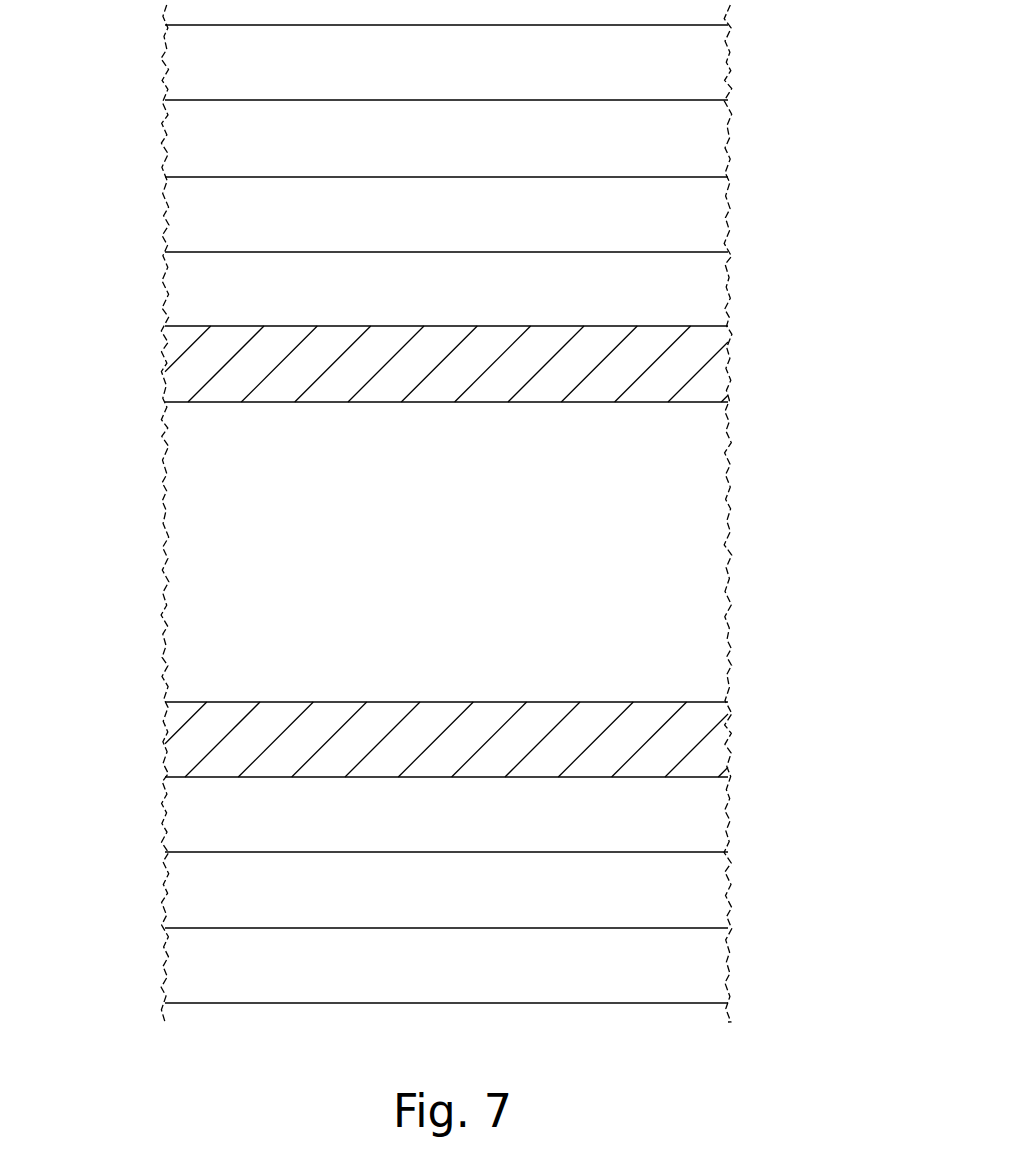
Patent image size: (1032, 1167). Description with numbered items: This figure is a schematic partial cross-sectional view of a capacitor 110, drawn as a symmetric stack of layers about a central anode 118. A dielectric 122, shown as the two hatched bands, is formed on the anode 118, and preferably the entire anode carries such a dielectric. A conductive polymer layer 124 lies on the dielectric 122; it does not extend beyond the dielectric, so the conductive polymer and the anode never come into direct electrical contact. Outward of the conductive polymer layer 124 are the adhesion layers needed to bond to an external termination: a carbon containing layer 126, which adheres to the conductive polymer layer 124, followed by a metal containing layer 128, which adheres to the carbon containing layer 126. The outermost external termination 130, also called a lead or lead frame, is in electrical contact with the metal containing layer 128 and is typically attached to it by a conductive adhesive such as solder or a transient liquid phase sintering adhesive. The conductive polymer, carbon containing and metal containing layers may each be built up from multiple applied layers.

The capacitor 110 is at (762, 482).
The anode 118 is at (600, 587).
The dielectric 122 is at (680, 365).
The conductive polymer layer 124 is at (243, 290).
The carbon containing layer 126 is at (684, 219).
The metal containing layer 128 is at (222, 143).
The external termination 130 is at (687, 72).